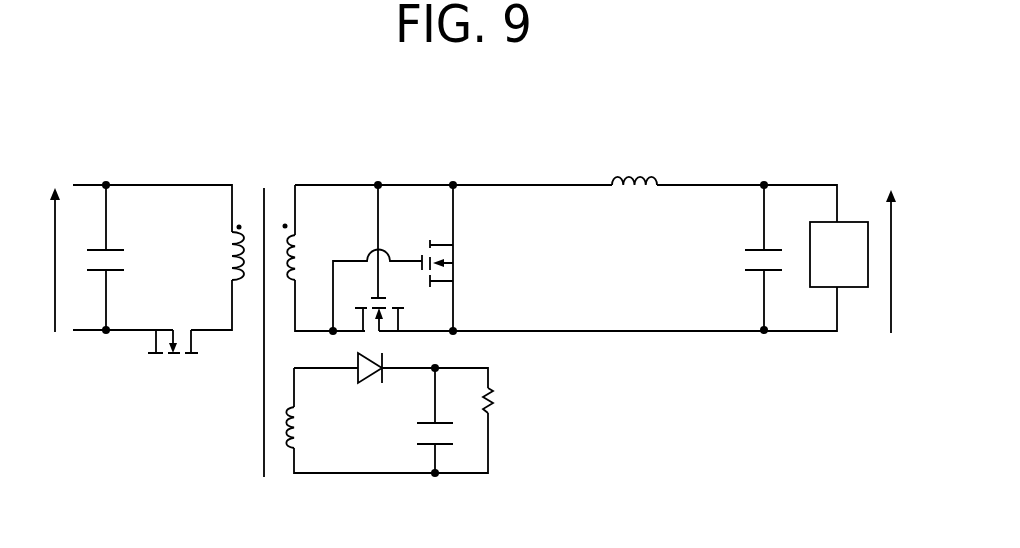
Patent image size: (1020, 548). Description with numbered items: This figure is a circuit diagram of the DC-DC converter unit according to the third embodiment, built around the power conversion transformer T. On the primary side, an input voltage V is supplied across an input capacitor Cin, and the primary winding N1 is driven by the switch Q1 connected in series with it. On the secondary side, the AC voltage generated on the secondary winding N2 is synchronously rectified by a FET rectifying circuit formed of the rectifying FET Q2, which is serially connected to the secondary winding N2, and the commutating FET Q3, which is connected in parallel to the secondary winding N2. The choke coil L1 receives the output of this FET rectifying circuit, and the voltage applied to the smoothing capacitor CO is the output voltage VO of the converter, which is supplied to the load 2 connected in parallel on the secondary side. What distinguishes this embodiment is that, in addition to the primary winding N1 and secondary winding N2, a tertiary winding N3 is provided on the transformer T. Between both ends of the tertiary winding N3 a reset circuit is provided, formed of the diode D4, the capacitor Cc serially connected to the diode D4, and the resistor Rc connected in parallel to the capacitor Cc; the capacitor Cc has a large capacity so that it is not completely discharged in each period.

The load 2 is at (853, 220).
The input voltage V is at (46, 260).
The input capacitor Cin is at (127, 257).
The primary winding N1 is at (220, 253).
The main switch Q1 is at (173, 345).
The power conversion transformer T is at (269, 313).
The secondary winding N2 is at (307, 252).
The rectifying FET Q2 is at (381, 258).
The commutating FET Q3 is at (458, 258).
The choke coil L1 is at (634, 161).
The smoothing capacitor CO is at (742, 257).
The output voltage VO is at (909, 261).
The tertiary winding N3 is at (309, 427).
The diode D4 is at (373, 387).
The capacitor Cc is at (418, 420).
The resistor Rc is at (505, 406).